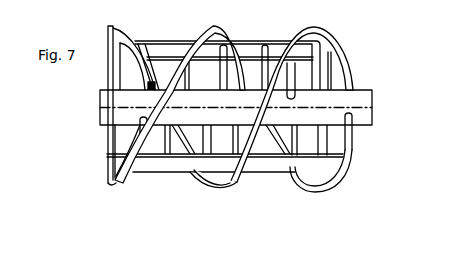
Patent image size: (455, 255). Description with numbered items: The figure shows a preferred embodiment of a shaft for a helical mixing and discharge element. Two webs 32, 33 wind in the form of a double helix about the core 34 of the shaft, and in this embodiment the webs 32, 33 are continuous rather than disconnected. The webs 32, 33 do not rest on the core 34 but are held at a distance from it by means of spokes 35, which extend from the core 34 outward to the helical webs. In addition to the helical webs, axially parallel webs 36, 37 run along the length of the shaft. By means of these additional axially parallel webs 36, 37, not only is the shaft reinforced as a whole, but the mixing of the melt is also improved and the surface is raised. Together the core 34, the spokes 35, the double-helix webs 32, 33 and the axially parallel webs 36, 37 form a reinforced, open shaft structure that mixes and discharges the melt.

The web 32 is at (115, 182).
The web 33 is at (214, 165).
The core 34 is at (355, 97).
The spokes 35 is at (323, 85).
The axially parallel web 36 is at (278, 51).
The axially parallel web 37 is at (155, 165).